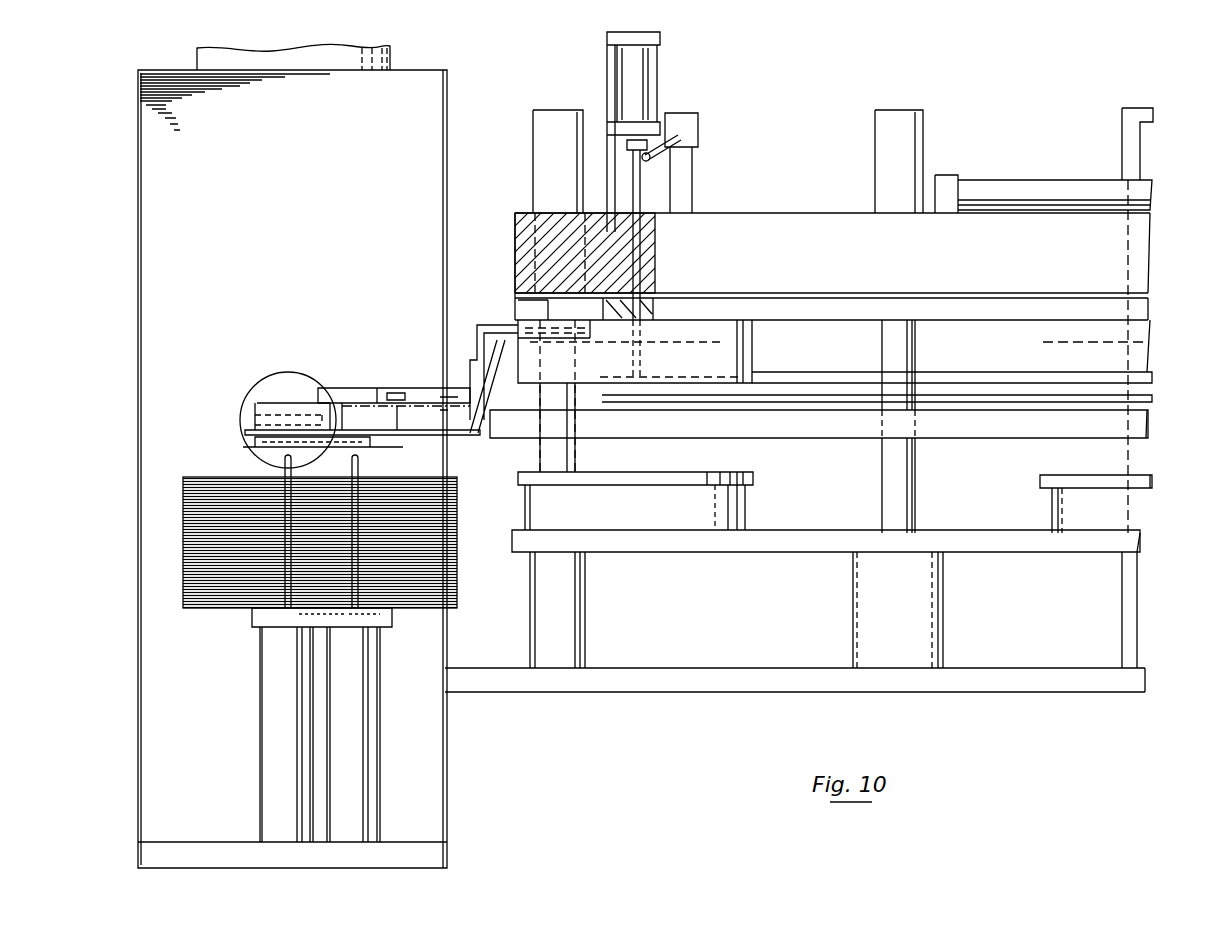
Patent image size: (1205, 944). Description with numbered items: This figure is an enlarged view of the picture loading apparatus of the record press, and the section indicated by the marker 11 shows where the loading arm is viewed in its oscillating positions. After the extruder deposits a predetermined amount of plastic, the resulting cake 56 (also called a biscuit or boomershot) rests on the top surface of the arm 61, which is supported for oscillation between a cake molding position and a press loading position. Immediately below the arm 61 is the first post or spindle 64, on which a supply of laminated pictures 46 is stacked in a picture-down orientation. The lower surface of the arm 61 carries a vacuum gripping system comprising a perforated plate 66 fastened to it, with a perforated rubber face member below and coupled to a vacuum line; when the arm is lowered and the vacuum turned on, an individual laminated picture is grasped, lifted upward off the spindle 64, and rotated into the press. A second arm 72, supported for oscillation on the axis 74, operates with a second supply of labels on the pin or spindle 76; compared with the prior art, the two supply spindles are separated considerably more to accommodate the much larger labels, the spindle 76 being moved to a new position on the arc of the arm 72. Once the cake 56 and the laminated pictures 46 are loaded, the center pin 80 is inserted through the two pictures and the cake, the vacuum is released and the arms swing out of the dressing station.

The section line 11- 11 is at (185, 388).
The laminated pictures 46 is at (278, 396).
The cake 56 is at (252, 412).
The arm 61 is at (456, 435).
The first post or spindle 64 is at (284, 460).
The perforated plate 66 is at (245, 432).
The second arm 72 is at (438, 388).
The axis 74 is at (548, 312).
The pin or spindle 76 is at (398, 447).
The center pin 80 is at (640, 312).